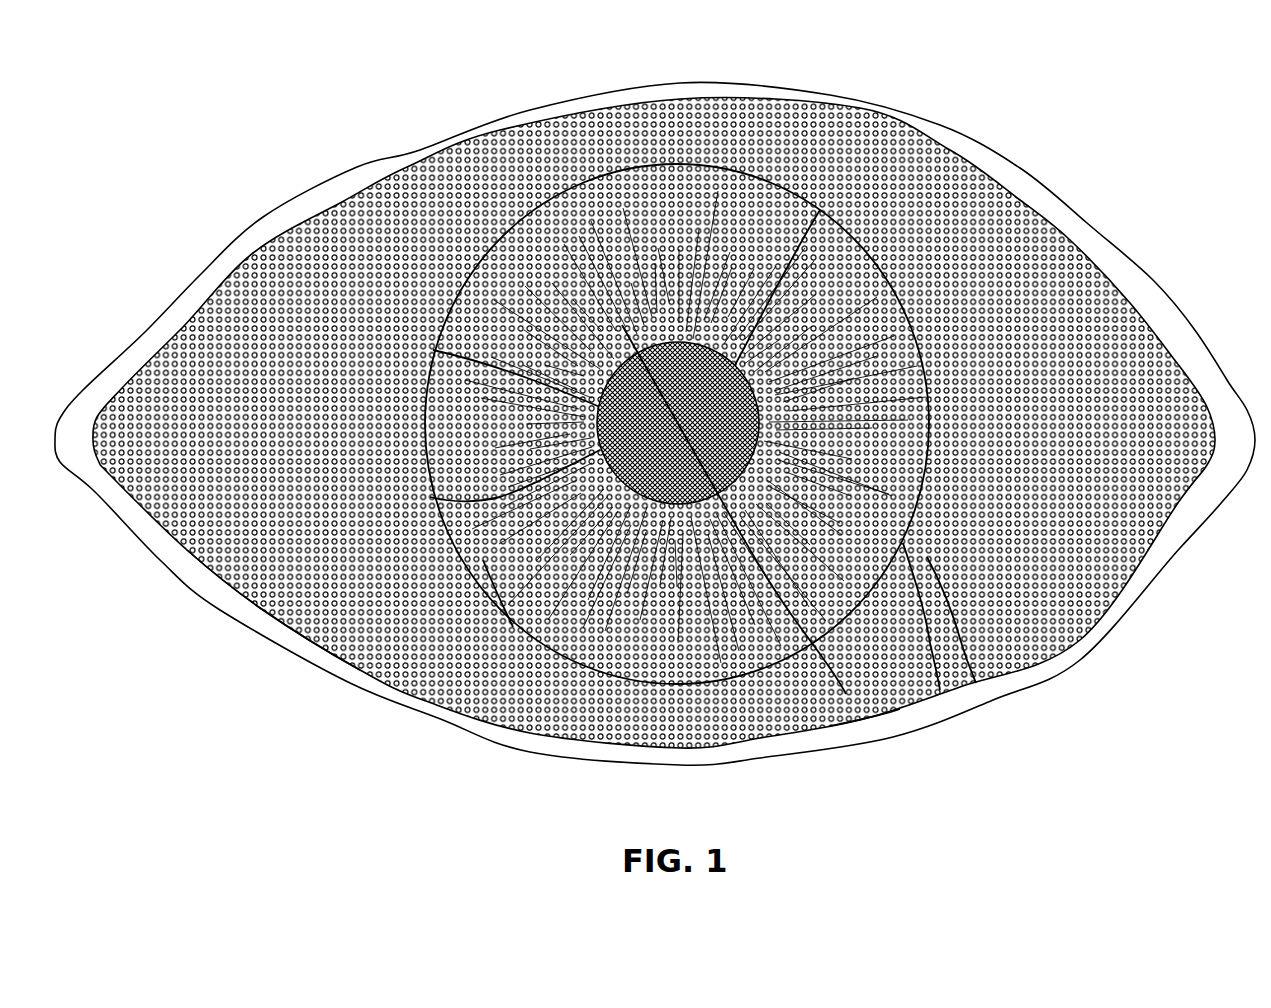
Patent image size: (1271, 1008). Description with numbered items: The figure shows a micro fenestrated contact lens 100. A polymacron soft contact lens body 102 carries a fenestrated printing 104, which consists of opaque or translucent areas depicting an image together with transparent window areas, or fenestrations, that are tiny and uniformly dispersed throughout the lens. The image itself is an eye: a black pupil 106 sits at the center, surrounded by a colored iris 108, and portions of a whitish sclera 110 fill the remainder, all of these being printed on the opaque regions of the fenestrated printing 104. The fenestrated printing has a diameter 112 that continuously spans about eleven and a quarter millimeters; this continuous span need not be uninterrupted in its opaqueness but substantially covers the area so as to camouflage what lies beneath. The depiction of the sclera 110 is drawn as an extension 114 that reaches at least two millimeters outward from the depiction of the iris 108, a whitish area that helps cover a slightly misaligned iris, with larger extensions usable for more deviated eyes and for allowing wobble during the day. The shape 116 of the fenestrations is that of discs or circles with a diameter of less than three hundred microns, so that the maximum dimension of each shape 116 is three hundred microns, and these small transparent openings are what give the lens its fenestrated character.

The micro fenestrated contact lens 100 is at (655, 420).
The polymacron soft contact lens body 102 is at (1050, 185).
The fenestrated printing 104 is at (428, 156).
The black pupil 106 is at (433, 350).
The colored iris 108 is at (265, 604).
The whitish sclera 110 is at (328, 617).
The diameter 112 is at (852, 710).
The extension 114 is at (511, 633).
The shape of fenestrations 116 is at (978, 683).